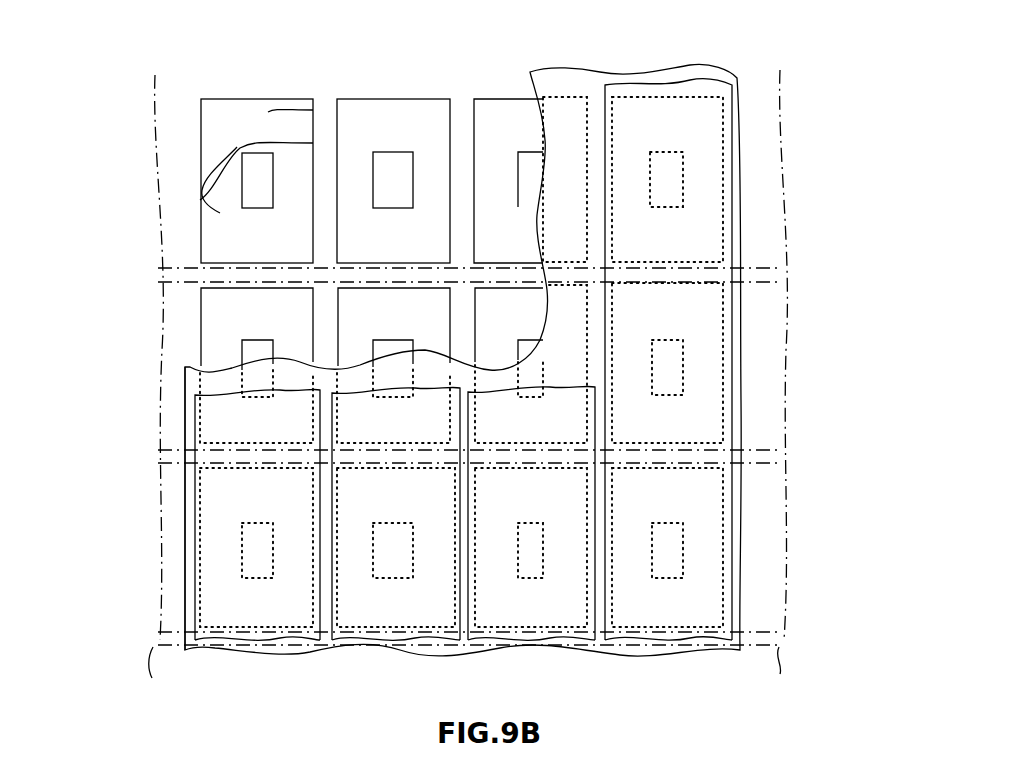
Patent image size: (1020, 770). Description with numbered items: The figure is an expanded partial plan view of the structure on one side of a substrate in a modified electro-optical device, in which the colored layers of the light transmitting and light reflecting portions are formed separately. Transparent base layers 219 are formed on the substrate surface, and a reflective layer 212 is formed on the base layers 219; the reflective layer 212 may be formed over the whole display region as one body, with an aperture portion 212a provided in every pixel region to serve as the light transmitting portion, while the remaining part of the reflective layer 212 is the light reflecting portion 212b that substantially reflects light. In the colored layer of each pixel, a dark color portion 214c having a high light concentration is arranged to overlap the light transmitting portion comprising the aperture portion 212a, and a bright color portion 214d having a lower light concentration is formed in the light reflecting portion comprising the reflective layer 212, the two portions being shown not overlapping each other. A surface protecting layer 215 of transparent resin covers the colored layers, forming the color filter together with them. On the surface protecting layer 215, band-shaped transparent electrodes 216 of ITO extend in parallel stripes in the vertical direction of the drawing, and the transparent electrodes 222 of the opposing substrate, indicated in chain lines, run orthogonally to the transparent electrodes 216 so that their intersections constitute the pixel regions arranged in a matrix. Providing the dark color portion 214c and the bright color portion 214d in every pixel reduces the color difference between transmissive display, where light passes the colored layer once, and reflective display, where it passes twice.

The base layer 219 is at (233, 98).
The reflective layer 212 is at (252, 143).
The aperture portion 212a is at (255, 143).
The light reflecting portion 212b is at (224, 167).
The dark color portion 214c is at (393, 163).
The bright color portion 214d is at (200, 200).
The surface protecting layer 215 is at (255, 367).
The transparent electrode 216 is at (731, 173).
The transparent electrode 222 is at (150, 395).